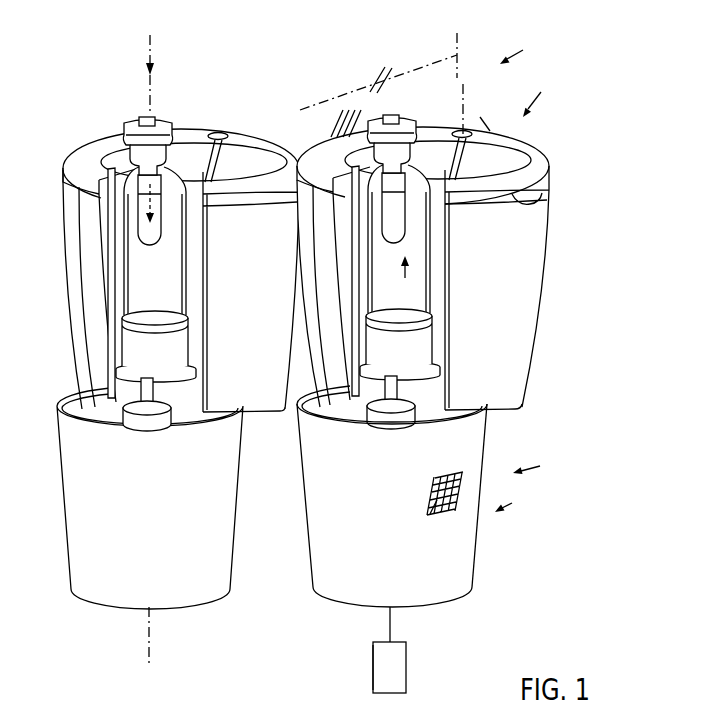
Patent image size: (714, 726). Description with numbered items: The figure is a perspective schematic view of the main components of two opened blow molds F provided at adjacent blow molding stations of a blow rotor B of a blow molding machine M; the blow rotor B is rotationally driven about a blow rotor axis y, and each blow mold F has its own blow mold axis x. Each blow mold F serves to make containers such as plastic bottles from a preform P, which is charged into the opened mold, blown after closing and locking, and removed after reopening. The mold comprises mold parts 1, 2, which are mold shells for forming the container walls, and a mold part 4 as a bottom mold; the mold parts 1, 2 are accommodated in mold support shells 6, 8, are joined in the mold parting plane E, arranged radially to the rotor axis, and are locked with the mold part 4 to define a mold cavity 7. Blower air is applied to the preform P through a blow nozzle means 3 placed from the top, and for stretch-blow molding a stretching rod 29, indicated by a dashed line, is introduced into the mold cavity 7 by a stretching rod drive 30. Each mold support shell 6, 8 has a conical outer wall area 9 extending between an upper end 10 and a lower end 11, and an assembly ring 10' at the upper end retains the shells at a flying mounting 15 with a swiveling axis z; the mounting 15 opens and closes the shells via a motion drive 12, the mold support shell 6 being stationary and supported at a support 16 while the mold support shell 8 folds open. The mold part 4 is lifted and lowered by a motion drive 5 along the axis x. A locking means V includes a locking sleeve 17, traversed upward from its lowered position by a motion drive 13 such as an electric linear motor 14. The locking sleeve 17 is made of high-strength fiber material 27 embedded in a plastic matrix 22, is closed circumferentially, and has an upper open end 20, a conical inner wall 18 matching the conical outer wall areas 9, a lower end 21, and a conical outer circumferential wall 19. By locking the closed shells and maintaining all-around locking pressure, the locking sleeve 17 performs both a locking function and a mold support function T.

The mold part 1 is at (356, 262).
The mold part 2 is at (513, 142).
The blow nozzle means 3 is at (414, 118).
The mold part 4 is at (377, 353).
The motion drive 5 is at (415, 418).
The mold support shell 6 is at (299, 147).
The mold cavity 7 is at (403, 280).
The mold support shell 8 is at (543, 175).
The conical outer wall area 9 is at (533, 234).
The upper end 10 is at (440, 166).
The assembly ring 10' is at (516, 200).
The lower end 11 is at (512, 408).
The motion drive 12 is at (483, 116).
The motion drive 13 is at (405, 667).
The electric linear motor 14 is at (366, 664).
The flying mounting 15 is at (481, 141).
The support 16 is at (325, 150).
The locking sleeve 17 is at (489, 547).
The conical inner wall 18 is at (314, 395).
The outer circumferential wall 19 is at (313, 539).
The upper open end 20 is at (297, 437).
The lower end 21 is at (344, 606).
The plastic matrix 22 is at (431, 490).
The high-strength fiber material 27 is at (430, 514).
The stretching rod 29 is at (147, 218).
The stretching rod drive 30 is at (155, 76).
The blow rotor B is at (416, 48).
The mold parting plane E is at (64, 192).
The blow mold F is at (539, 97).
The blow molding machine M is at (521, 48).
The preform P is at (393, 244).
The mold support function T is at (534, 464).
The locking means V is at (511, 503).
The blow mold axis x is at (152, 647).
The blow rotor axis y is at (460, 46).
The swiveling axis z is at (466, 90).